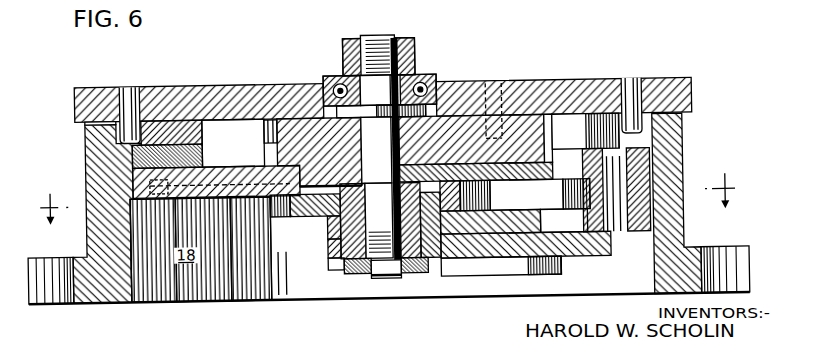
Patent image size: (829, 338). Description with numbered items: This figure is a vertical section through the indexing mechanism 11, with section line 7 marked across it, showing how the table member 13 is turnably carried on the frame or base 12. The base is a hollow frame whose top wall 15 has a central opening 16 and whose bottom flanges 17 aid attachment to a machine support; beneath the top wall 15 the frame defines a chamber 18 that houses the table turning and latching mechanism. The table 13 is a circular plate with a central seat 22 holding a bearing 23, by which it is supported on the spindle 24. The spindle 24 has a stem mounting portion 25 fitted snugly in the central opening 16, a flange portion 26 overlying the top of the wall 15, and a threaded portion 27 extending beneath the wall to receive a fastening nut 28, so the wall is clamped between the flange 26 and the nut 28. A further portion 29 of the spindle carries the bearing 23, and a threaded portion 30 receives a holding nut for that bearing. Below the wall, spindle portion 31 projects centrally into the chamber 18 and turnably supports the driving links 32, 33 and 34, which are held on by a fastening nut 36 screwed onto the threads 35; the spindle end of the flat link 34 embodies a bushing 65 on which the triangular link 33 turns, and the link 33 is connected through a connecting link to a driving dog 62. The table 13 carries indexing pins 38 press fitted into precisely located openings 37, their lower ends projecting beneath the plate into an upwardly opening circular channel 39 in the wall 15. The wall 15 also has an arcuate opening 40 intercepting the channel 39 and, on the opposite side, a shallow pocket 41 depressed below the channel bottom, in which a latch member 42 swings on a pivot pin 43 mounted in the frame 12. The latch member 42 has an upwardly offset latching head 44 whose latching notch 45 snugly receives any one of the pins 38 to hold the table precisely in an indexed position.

The indexing mechanism 11 is at (705, 67).
The frame or base 12 is at (88, 224).
The table member 13 is at (76, 95).
The top wall 15 is at (238, 193).
The central opening 16 is at (405, 143).
The bottom flanges 17 is at (80, 289).
The chamber or cavity 18 is at (177, 259).
The seat 22 is at (325, 87).
The bearing 23 is at (427, 82).
The spindle 24 is at (408, 25).
The stem mounting portion 25 is at (376, 150).
The flange portion 26 is at (372, 119).
The threaded portion 27 is at (371, 189).
The fastening nut 28 is at (319, 151).
The bearing carrying portion 29 is at (370, 98).
The threaded portion 30 is at (377, 47).
The spindle portion 31 is at (375, 248).
The driving link 32 is at (325, 221).
The link 33 is at (328, 226).
The link 34 is at (333, 258).
The threaded portion 35 is at (380, 279).
The fastening nut 36 is at (417, 274).
The openings 37 is at (117, 95).
The indexing pins 38 is at (129, 84).
The circular channel 39 is at (140, 142).
The arcuate opening 40 is at (543, 112).
The pocket 41 is at (150, 167).
The latch member 42 is at (197, 196).
The pivot pin 43 is at (160, 197).
The latching head 44 is at (170, 118).
The latching notch 45 is at (113, 126).
The driving dog 62 is at (577, 130).
The bushing 65 is at (355, 274).
The section line 7- 7 is at (386, 195).